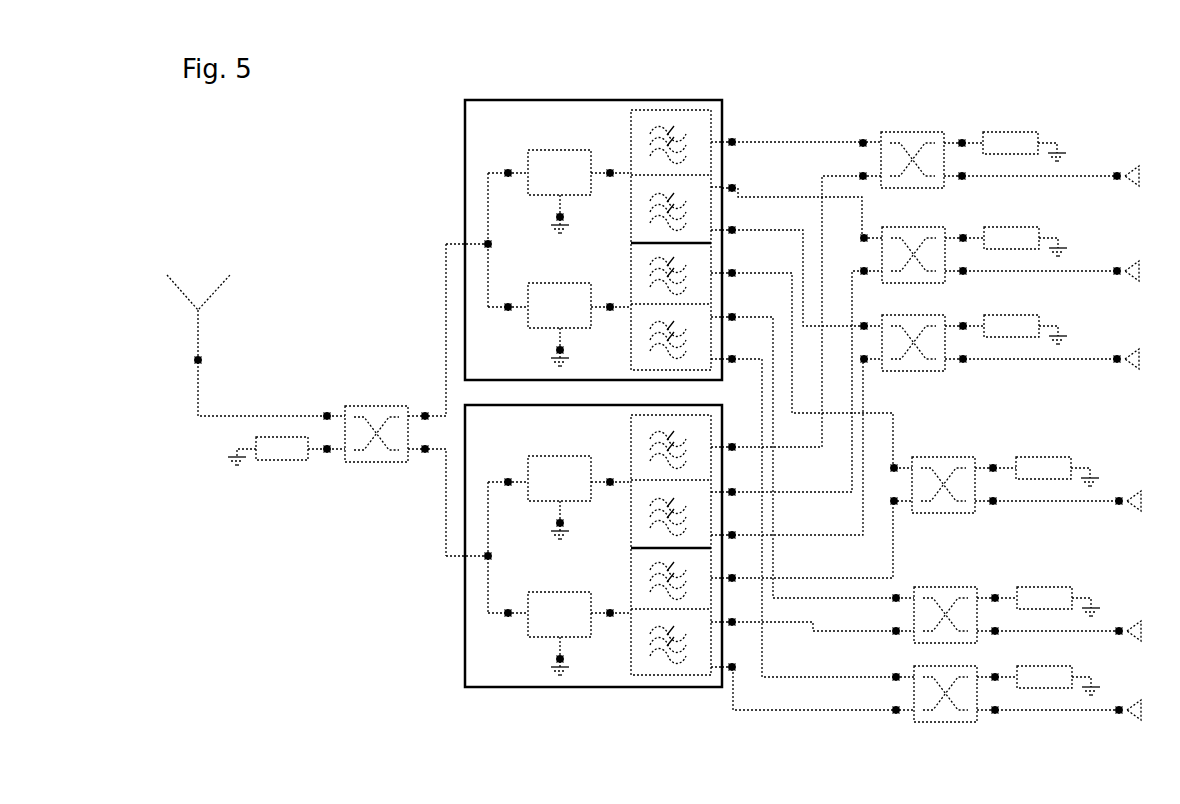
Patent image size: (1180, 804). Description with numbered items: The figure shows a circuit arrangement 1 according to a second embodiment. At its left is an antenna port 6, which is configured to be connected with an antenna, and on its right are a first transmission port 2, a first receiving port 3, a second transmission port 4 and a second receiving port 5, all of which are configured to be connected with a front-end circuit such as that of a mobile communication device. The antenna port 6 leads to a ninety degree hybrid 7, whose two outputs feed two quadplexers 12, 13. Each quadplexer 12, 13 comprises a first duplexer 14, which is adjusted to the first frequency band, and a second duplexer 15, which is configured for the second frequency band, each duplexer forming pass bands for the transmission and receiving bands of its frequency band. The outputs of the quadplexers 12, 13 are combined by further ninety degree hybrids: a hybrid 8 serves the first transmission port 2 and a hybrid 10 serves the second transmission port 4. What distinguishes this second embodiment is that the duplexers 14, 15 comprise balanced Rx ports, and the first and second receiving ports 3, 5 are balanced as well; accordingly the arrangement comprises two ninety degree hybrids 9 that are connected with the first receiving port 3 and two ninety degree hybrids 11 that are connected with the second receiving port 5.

The circuit arrangement 1 is at (448, 107).
The first transmission port 2 is at (1117, 172).
The first receiving port 3 is at (1124, 281).
The second transmission port 4 is at (1121, 498).
The second receiving port 5 is at (1120, 640).
The antenna port 6 is at (197, 363).
The 90 degree hybrid 7 is at (375, 417).
The 90 degree hybrid 8 is at (915, 142).
The 90 degree hybrids 9 is at (930, 277).
The 90 degree hybrid 10 is at (958, 465).
The 90 degree hybrids 11 is at (972, 623).
The quadplexer 12 is at (500, 153).
The quadplexer 13 is at (490, 657).
The first duplexer 14 is at (703, 190).
The second duplexer 15 is at (638, 332).